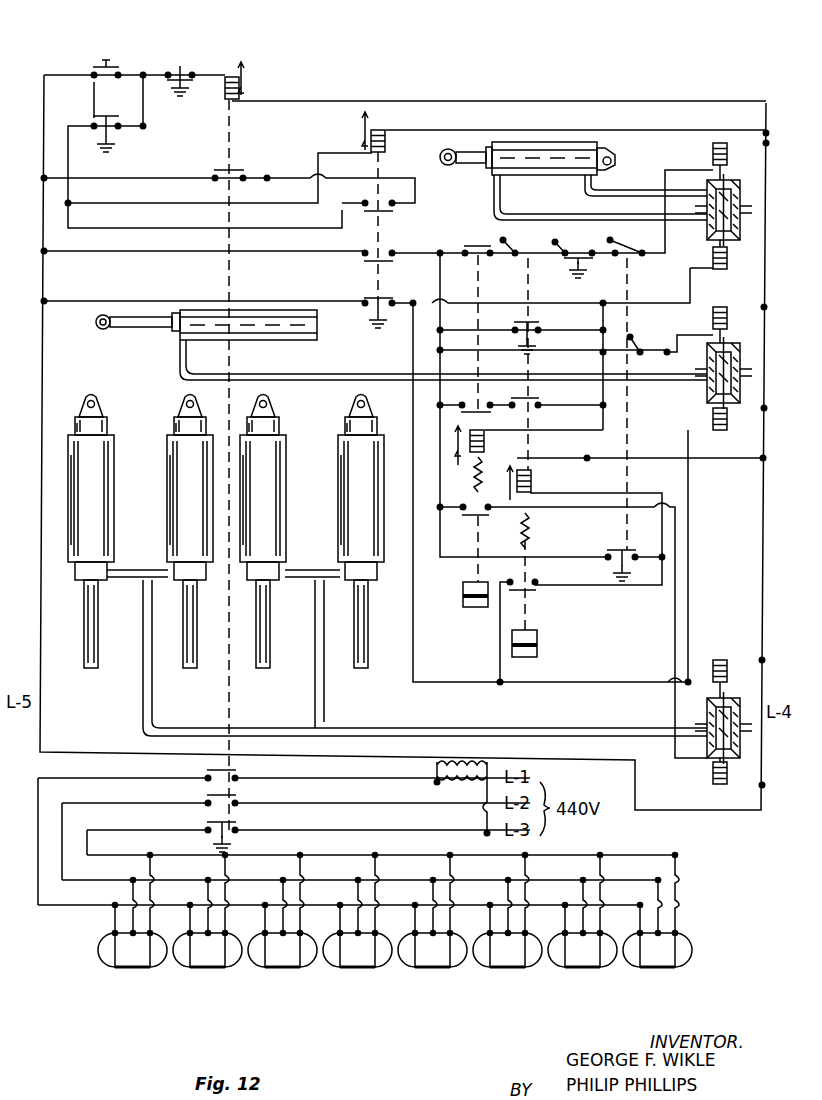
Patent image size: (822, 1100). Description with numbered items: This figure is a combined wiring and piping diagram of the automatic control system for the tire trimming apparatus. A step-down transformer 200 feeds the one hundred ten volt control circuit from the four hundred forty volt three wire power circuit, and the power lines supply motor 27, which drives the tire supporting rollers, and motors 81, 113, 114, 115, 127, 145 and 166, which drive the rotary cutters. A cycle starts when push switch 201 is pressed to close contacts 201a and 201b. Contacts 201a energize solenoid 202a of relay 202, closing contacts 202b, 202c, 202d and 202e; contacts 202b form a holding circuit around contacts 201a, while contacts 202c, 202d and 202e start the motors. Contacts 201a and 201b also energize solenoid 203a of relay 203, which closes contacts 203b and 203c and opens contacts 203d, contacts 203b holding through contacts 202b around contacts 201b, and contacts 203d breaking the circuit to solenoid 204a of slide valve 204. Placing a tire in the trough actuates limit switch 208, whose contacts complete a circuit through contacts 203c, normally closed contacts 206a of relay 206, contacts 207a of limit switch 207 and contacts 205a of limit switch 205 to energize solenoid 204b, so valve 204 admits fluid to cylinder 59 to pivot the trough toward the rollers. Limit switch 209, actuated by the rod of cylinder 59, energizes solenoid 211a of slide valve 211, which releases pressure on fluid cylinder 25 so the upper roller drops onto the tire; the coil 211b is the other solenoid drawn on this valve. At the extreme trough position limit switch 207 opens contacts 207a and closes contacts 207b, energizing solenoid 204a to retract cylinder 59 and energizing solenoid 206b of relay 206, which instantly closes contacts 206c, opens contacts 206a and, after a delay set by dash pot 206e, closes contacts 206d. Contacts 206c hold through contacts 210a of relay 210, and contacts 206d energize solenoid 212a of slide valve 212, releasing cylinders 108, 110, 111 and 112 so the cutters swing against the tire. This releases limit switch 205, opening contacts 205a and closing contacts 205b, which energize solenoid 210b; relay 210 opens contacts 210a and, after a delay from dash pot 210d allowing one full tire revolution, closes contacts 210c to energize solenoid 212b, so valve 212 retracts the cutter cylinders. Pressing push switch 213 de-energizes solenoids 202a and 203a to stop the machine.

The fluid cylinder 25 is at (245, 338).
The motor 27 is at (134, 967).
The fluid actuated cylinder 59 is at (560, 175).
The motor 81 is at (209, 967).
The cylinder 108 is at (68, 580).
The cylinder 110 is at (168, 436).
The cylinder 111 is at (280, 529).
The cylinder 112 is at (340, 438).
The motor 113 is at (284, 967).
The motor 114 is at (359, 967).
The motor 115 is at (434, 967).
The motor 127 is at (509, 967).
The motor 145 is at (584, 967).
The motor 166 is at (659, 967).
The step-down transformer 200 is at (430, 775).
The push switch 201 is at (118, 62).
The contacts 201a is at (93, 66).
The contacts 201b is at (100, 116).
The relay 202 is at (229, 72).
The solenoid 202a is at (236, 100).
The contacts 202b is at (220, 170).
The contacts 202c is at (237, 772).
The contacts 202d is at (237, 797).
The contacts 202e is at (237, 824).
The relay 203 is at (382, 128).
The solenoid 203a is at (388, 140).
The contacts 203b is at (398, 208).
The contacts 203c is at (390, 265).
The contacts 203d is at (368, 296).
The solenoid actuated slide valve 204 is at (696, 192).
The solenoid 204a is at (697, 258).
The solenoid 204b is at (713, 148).
The limit switch 205 is at (626, 242).
The contacts 205a is at (628, 262).
The contacts 205b is at (622, 556).
The relay 206 is at (462, 478).
The contacts 206a is at (476, 246).
The solenoid 206b is at (486, 445).
The contacts 206c is at (482, 395).
The contacts 206d is at (482, 516).
The dash pot 206e is at (463, 607).
The limit switch 207 is at (530, 240).
The contacts 207a is at (530, 262).
The contacts 207b is at (540, 320).
The limit switch 208 is at (574, 252).
The limit switch 209 is at (640, 338).
The relay 210 is at (543, 530).
The contacts 210a is at (534, 396).
The solenoid 210b is at (532, 480).
The contacts 210c is at (530, 592).
The dash pot 210d is at (540, 652).
The slide valve 211 is at (698, 402).
The solenoid 211a is at (714, 308).
The solenoid coil 211b is at (725, 432).
The slide valve 212 is at (700, 758).
The solenoid 212a is at (713, 780).
The solenoid 212b is at (713, 660).
The push switch 213 is at (182, 68).